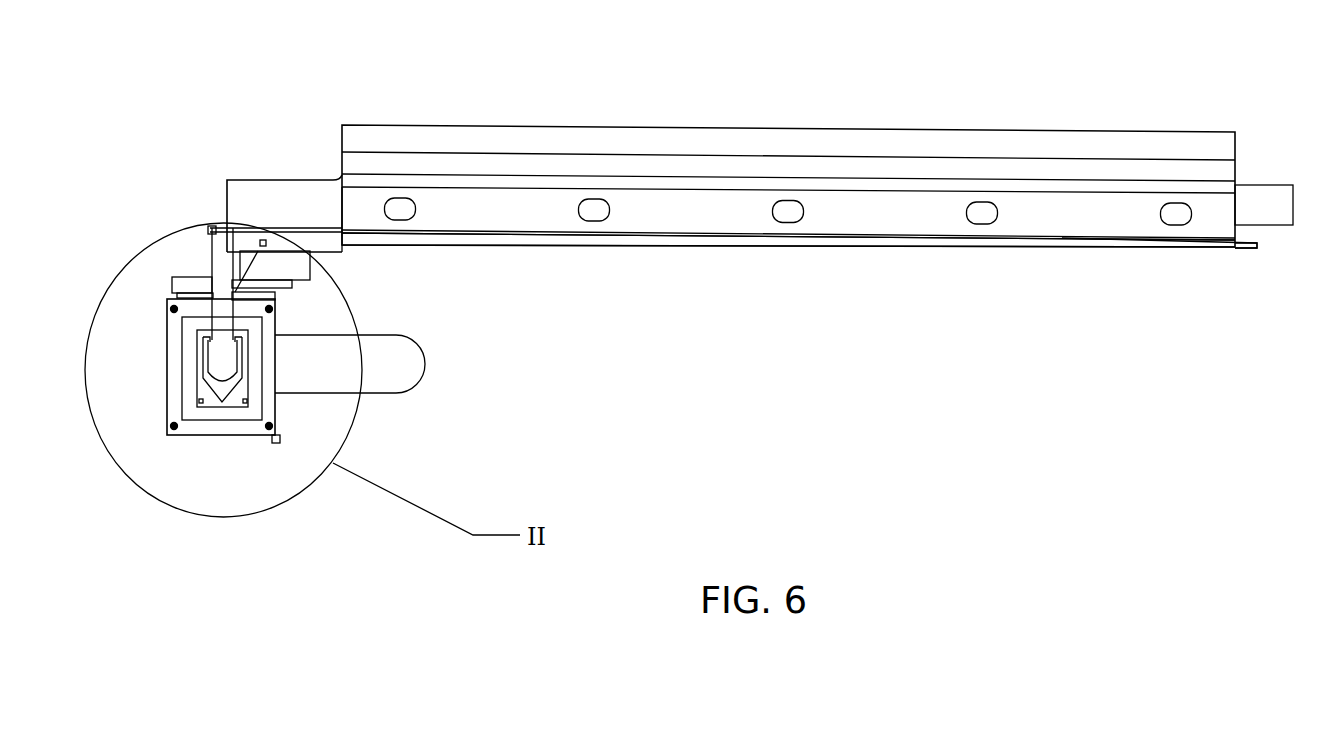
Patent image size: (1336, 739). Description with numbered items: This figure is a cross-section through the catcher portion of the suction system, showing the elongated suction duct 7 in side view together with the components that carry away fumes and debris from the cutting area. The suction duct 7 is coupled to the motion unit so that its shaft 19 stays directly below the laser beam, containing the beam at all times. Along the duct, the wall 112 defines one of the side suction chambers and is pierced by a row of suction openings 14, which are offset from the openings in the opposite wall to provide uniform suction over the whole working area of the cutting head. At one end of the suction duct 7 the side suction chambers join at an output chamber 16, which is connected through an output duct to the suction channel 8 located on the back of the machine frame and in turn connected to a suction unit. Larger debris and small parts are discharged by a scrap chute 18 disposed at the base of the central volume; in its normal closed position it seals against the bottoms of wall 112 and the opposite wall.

The suction duct 7 is at (852, 210).
The suction channel 8 is at (233, 402).
The suction openings 14 is at (982, 216).
The output chamber 16 is at (255, 190).
The scrap chute 18 is at (1200, 250).
The shaft 19 is at (1257, 244).
The wall 112 is at (1058, 220).